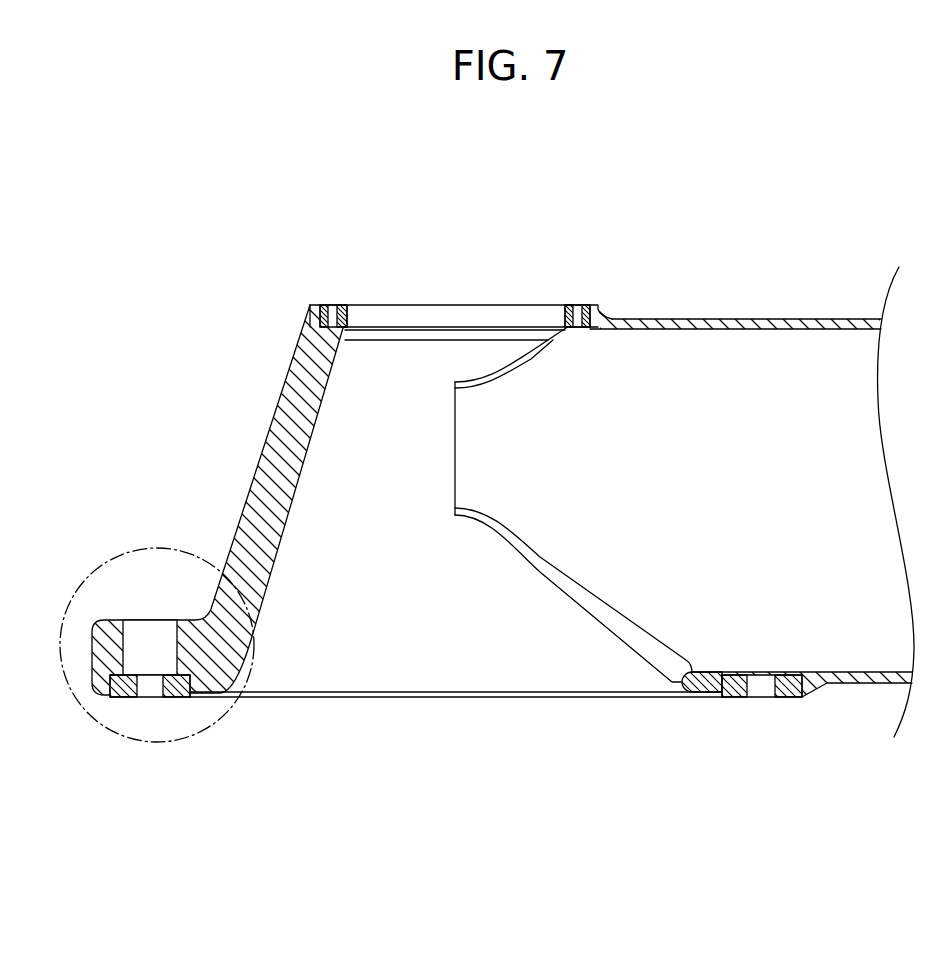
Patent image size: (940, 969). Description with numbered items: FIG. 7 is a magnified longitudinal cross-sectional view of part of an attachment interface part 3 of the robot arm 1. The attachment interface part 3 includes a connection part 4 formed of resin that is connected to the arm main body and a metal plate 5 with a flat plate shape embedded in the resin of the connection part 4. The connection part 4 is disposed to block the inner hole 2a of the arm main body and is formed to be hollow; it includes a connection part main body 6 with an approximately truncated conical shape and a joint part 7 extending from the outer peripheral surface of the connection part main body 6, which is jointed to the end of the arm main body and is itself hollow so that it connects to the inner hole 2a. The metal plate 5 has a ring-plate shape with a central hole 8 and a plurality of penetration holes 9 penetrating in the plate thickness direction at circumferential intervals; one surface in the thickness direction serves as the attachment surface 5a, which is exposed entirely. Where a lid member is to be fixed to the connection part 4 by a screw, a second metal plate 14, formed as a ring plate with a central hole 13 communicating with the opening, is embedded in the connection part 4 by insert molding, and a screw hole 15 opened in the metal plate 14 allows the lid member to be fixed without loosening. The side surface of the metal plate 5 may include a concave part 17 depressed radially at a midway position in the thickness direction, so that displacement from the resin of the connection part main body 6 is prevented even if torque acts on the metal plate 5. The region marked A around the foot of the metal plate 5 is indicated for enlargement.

The robot arm 1 is at (280, 272).
The inner hole 2a is at (707, 330).
The attachment interface part 3 is at (297, 327).
The connection part 4 is at (266, 438).
The metal plate 5 is at (797, 700).
The attachment surface 5a is at (125, 697).
The connection part main body 6 is at (247, 496).
The joint part 7 is at (757, 319).
The central hole 8 is at (712, 690).
The penetration holes 9 is at (152, 697).
The central hole 13 is at (565, 317).
The metal plate 14 is at (569, 305).
The screw hole 15 is at (336, 317).
The concave part 17 is at (348, 333).
The enlarged region A is at (90, 573).